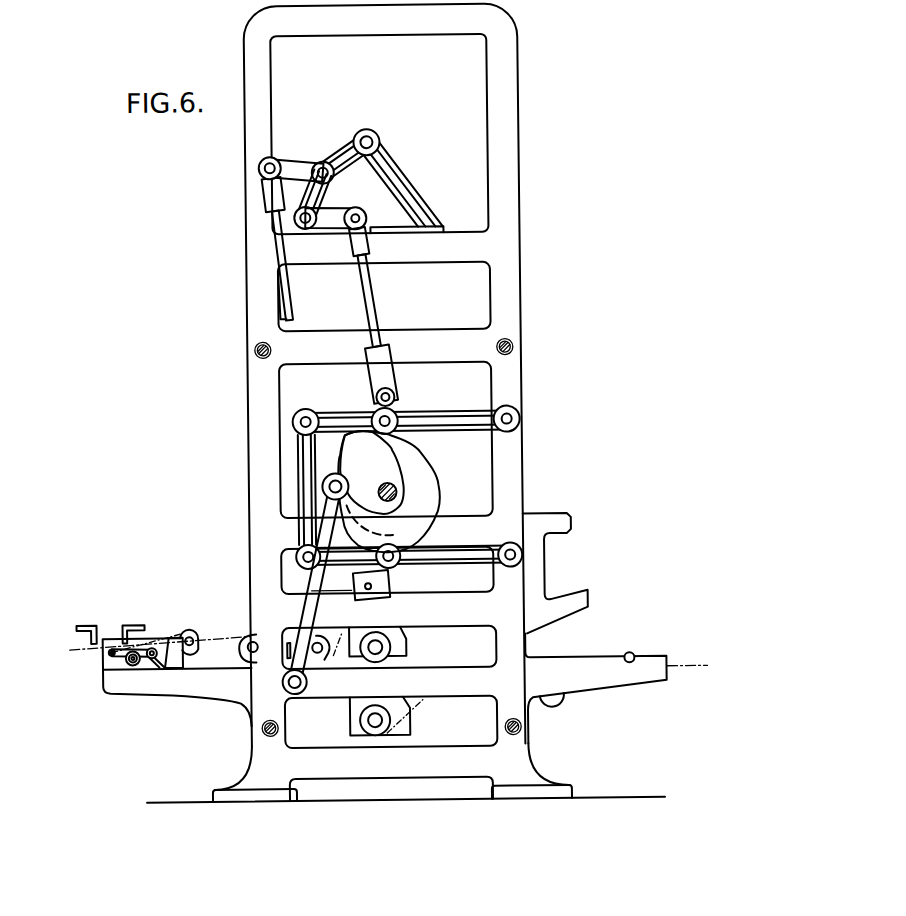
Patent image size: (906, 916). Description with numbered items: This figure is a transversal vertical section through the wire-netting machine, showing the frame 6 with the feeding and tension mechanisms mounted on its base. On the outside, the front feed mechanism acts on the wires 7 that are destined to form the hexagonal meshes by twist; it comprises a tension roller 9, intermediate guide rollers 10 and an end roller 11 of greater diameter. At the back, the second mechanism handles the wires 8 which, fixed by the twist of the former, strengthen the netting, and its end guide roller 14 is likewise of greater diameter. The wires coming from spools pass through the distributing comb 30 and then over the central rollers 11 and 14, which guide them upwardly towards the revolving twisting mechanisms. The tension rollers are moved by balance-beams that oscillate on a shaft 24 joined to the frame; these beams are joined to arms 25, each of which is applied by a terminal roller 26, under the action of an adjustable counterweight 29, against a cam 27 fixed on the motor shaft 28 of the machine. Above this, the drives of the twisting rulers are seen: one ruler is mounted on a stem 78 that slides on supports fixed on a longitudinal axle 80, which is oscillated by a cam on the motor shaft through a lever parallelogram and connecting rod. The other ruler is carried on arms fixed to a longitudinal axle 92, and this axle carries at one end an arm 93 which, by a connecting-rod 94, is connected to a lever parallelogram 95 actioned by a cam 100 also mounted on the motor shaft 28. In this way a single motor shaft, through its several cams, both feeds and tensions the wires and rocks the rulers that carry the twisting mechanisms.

The frame 6 is at (509, 284).
The wires 7 is at (81, 645).
The wires 8 is at (687, 671).
The tension roller 9 is at (188, 633).
The intermediate guide rollers 10 is at (240, 641).
The end roller 11 is at (395, 642).
The guide roller 14 is at (390, 718).
The shaft 24 is at (295, 691).
The arms 25 is at (306, 606).
The terminal roller 26 is at (325, 479).
The cam 27 is at (353, 455).
The motor shaft 28 is at (397, 493).
The adjustable counterweight 29 is at (375, 585).
The distributing comb 30 is at (110, 645).
The stem 78 is at (284, 289).
The longitudinal axle 80 is at (323, 169).
The longitudinal axle 92 is at (299, 220).
The arm 93 is at (330, 229).
The connecting-rod 94 is at (375, 312).
The lever parallelogram 95 is at (422, 420).
The cam 100 is at (403, 463).